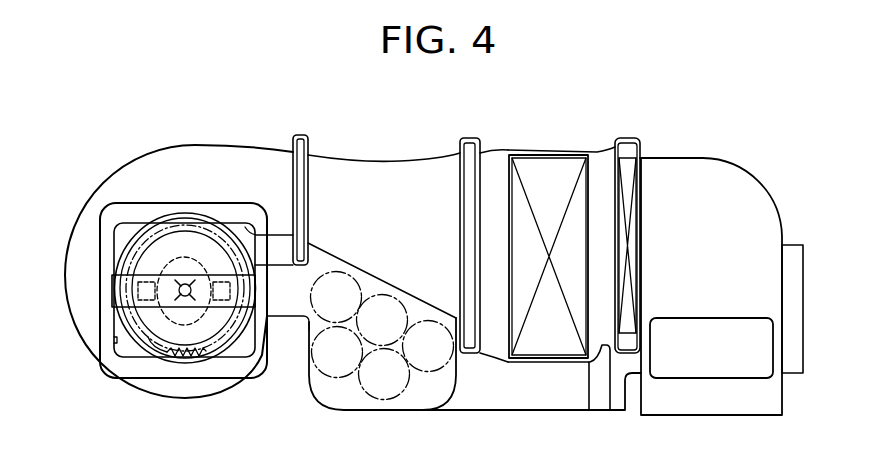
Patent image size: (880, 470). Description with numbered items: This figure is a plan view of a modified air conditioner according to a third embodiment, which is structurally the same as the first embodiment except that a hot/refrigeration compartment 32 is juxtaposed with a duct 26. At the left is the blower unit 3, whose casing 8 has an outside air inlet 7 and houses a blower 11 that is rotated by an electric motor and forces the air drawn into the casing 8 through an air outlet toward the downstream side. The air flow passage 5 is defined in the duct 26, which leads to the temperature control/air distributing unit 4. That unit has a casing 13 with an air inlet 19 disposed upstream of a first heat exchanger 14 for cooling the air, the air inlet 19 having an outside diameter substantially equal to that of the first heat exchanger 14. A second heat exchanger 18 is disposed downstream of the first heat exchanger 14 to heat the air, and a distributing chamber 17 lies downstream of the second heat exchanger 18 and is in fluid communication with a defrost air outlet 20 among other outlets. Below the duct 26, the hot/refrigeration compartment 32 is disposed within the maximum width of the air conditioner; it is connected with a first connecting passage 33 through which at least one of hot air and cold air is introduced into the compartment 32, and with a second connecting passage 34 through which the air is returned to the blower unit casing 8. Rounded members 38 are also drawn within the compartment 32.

The blower unit 3 is at (76, 216).
The temperature control/air distributing unit 4 is at (539, 144).
The air flow passage 5 is at (348, 185).
The outside air inlet 7 is at (113, 344).
The casing 8 is at (170, 385).
The blower 11 is at (208, 330).
The casing 13 is at (508, 150).
The first heat exchanger 14 is at (558, 172).
The distributing chamber 17 is at (753, 292).
The second heat exchanger 18 is at (630, 170).
The air inlet 19 is at (484, 150).
The defrost air outlet 20 is at (707, 378).
The duct 26 is at (398, 158).
The hot/refrigeration compartment 32 is at (320, 397).
The first connecting passage 33 is at (492, 397).
The second connecting passage 34 is at (283, 303).
The cylindrical members 38 is at (358, 380).